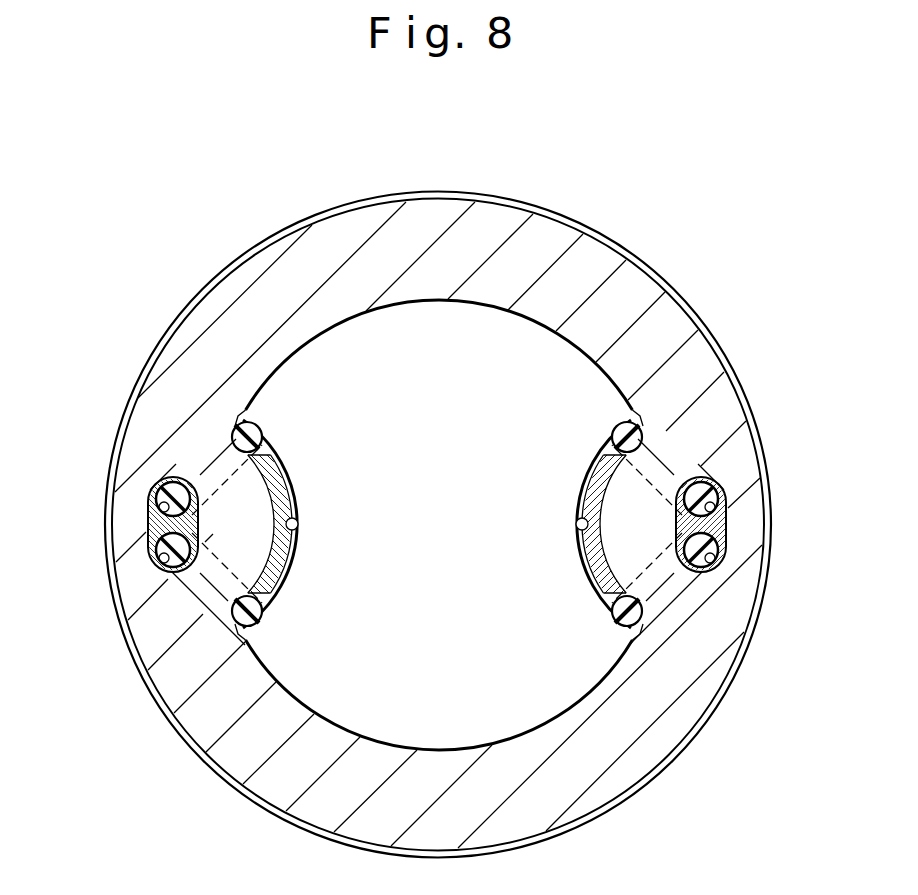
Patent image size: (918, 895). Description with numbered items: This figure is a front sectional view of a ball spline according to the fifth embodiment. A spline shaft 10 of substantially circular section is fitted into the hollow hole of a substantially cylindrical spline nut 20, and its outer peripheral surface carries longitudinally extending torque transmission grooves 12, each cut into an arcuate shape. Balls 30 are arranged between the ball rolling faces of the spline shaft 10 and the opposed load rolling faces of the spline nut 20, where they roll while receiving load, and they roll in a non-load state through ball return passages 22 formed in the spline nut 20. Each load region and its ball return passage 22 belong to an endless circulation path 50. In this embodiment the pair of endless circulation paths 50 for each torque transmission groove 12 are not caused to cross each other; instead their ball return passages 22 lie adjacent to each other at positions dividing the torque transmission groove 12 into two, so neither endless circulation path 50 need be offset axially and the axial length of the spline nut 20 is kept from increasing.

The spline shaft 10 is at (433, 318).
The torque transmission groove 12 is at (300, 527).
The spline nut 20 is at (521, 199).
The ball return passage 22 is at (152, 546).
The ball 30 is at (262, 441).
The endless circulation path 50 is at (201, 450).